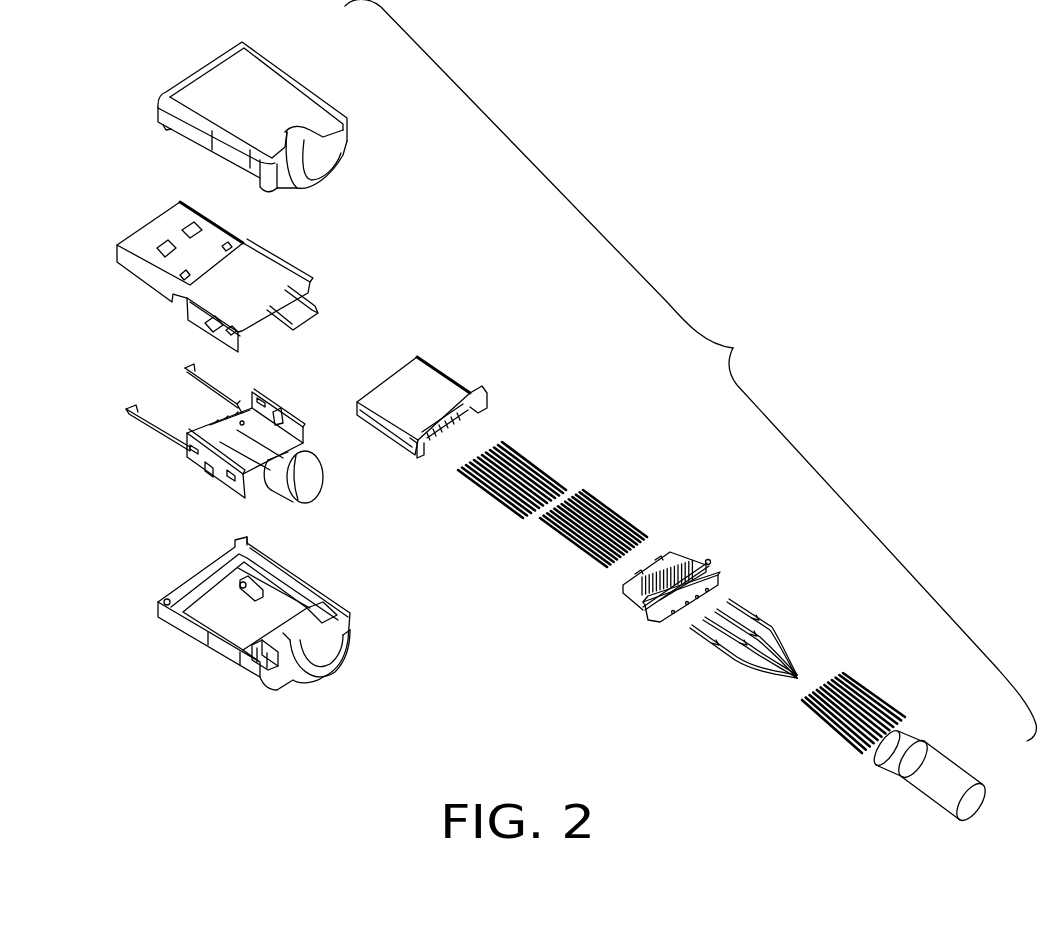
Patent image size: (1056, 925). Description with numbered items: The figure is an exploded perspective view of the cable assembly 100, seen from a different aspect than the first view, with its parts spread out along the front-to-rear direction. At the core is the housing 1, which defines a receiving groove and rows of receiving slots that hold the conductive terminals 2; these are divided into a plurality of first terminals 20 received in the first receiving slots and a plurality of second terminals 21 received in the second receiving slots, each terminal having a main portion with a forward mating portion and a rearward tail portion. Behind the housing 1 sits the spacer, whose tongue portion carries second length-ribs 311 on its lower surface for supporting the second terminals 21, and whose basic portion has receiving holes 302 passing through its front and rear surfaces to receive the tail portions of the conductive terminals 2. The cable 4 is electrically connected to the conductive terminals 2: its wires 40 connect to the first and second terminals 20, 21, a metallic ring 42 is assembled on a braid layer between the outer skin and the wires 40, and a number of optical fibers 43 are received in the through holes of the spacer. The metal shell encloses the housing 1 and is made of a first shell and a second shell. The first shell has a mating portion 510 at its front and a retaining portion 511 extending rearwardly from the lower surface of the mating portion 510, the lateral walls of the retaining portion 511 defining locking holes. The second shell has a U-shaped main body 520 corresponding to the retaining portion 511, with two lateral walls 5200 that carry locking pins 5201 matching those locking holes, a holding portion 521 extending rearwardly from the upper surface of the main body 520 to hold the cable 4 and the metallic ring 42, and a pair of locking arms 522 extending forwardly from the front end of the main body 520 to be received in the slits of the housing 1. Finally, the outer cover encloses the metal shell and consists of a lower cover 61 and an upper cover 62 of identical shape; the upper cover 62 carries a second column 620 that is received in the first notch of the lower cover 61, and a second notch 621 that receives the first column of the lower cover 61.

The cable assembly 100 is at (733, 348).
The lower cover 61 is at (260, 90).
The upper cover 62 is at (190, 632).
The second column 620 is at (260, 658).
The second notch 621 is at (325, 616).
The mating portion 510 is at (162, 232).
The retaining portion 511 is at (262, 278).
The main body 520 is at (276, 442).
The lateral walls 5200 is at (296, 433).
The locking pin 5201 is at (210, 473).
The holding portion 521 is at (310, 473).
The locking arms 522 is at (128, 418).
The housing 1 is at (423, 388).
The conductive terminals 2 is at (685, 477).
The first terminals 20 is at (532, 467).
The second terminals 21 is at (608, 507).
The second length-ribs 311 is at (677, 552).
The receiving holes 302 is at (707, 572).
The optical fibers 43 is at (777, 640).
The wires 40 is at (882, 698).
The metallic ring 42 is at (912, 742).
The cable 4 is at (943, 772).